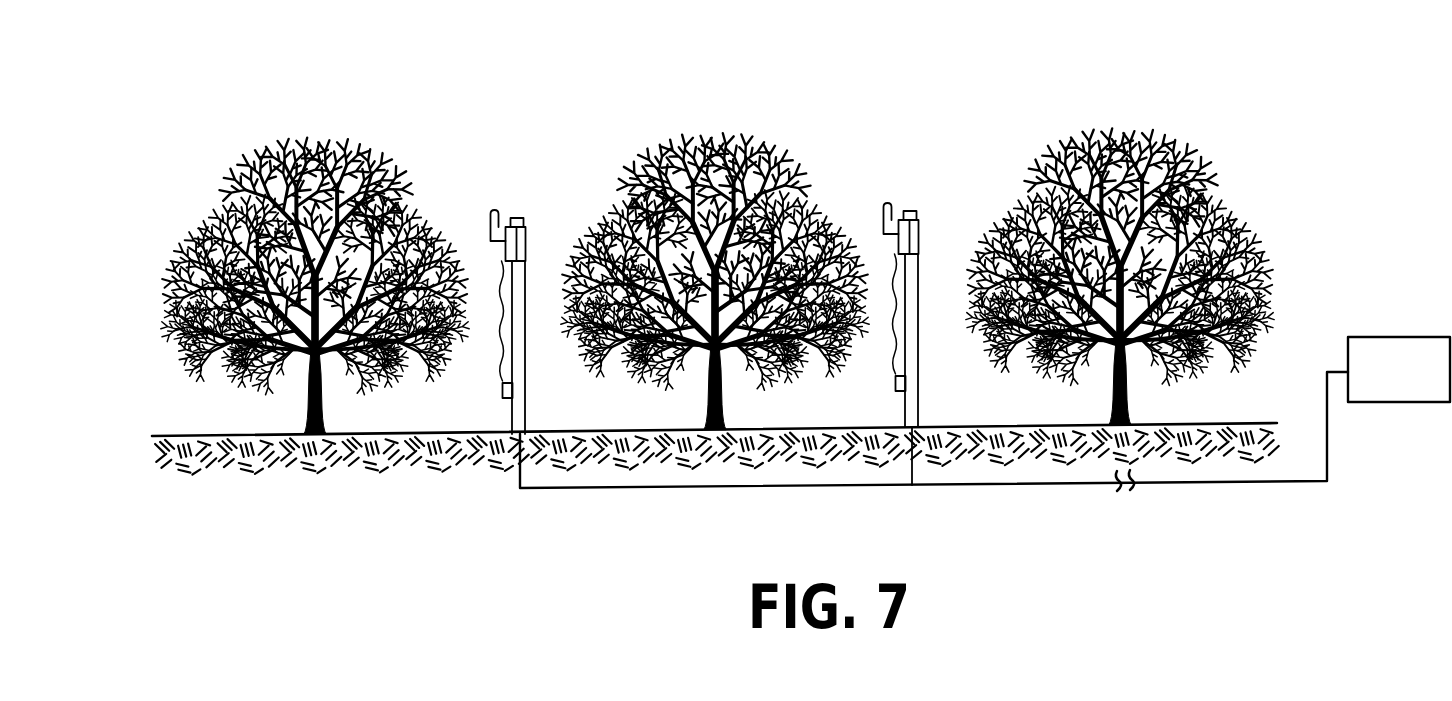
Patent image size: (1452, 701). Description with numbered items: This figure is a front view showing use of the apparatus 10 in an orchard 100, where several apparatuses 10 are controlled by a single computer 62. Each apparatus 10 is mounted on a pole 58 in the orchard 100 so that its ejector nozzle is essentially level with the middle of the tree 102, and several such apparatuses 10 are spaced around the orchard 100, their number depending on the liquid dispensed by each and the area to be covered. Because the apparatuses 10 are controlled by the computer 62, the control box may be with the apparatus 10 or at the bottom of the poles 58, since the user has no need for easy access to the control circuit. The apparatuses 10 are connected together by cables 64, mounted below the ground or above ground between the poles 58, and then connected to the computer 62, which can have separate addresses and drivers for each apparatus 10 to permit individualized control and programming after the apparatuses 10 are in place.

The orchard 100 is at (655, 98).
The apparatus 10 is at (526, 240).
The tree 102 is at (800, 190).
The pole 58 is at (918, 300).
The computer 62 is at (1393, 337).
The cables 64 is at (1082, 487).